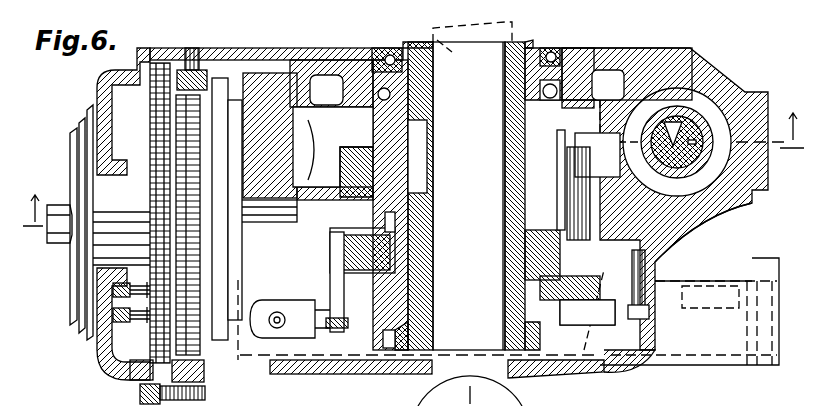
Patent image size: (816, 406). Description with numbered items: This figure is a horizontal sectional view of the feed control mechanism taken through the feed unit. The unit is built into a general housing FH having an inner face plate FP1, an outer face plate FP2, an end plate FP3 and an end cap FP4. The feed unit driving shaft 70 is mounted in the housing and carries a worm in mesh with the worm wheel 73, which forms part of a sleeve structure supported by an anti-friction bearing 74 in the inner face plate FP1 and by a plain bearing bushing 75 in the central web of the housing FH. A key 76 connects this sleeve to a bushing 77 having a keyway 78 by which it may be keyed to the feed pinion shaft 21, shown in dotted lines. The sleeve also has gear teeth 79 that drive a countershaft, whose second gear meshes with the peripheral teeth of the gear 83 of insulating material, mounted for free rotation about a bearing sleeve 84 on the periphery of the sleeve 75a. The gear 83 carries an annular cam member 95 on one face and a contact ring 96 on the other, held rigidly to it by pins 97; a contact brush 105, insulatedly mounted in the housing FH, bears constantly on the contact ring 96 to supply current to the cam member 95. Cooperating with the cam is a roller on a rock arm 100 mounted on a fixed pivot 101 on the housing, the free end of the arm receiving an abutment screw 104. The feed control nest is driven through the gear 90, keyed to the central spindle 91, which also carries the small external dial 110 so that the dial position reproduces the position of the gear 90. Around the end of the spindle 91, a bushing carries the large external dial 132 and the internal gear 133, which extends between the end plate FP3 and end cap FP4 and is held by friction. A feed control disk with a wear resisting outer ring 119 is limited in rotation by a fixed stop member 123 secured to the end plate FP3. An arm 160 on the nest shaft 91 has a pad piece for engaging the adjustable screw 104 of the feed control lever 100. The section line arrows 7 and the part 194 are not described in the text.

The general housing FH is at (785, 70).
The section line 7 is at (414, 180).
The feed unit driving shaft 70 is at (688, 135).
The inner face plate FP1 is at (700, 42).
The anti-friction bearing 74 is at (566, 80).
The worm wheel 73 is at (624, 120).
The contact brush 105 is at (657, 228).
The keyway 78 is at (503, 167).
The plain bearing bushing 75 is at (376, 155).
The key 76 is at (418, 158).
The bushing 77 is at (508, 275).
The pins 97 is at (545, 265).
The bearing sleeve 84 is at (568, 290).
The feed pinion shaft 21 is at (432, 35).
The sleeve 75a is at (410, 262).
The contact ring 96 is at (392, 248).
The gear 83 is at (352, 240).
The gear teeth 79 is at (385, 209).
The spindle 91 is at (263, 211).
The internal gear 133 is at (160, 152).
The gear 90 is at (190, 180).
The wear resisting outer ring 119 is at (218, 115).
The fixed stop member 123 is at (200, 77).
The small external dial 110 is at (70, 267).
The large external dial 132 is at (86, 326).
The end cap FP4 is at (100, 355).
The arm 160 is at (235, 260).
The abutment screw 104 is at (272, 330).
The annular cam member 95 is at (360, 270).
The rock arm 100 is at (374, 312).
The fixed pivot 101 is at (600, 318).
The outer face plate FP2 is at (590, 368).
The end plate FP3 is at (245, 405).
The screw 194 is at (140, 392).